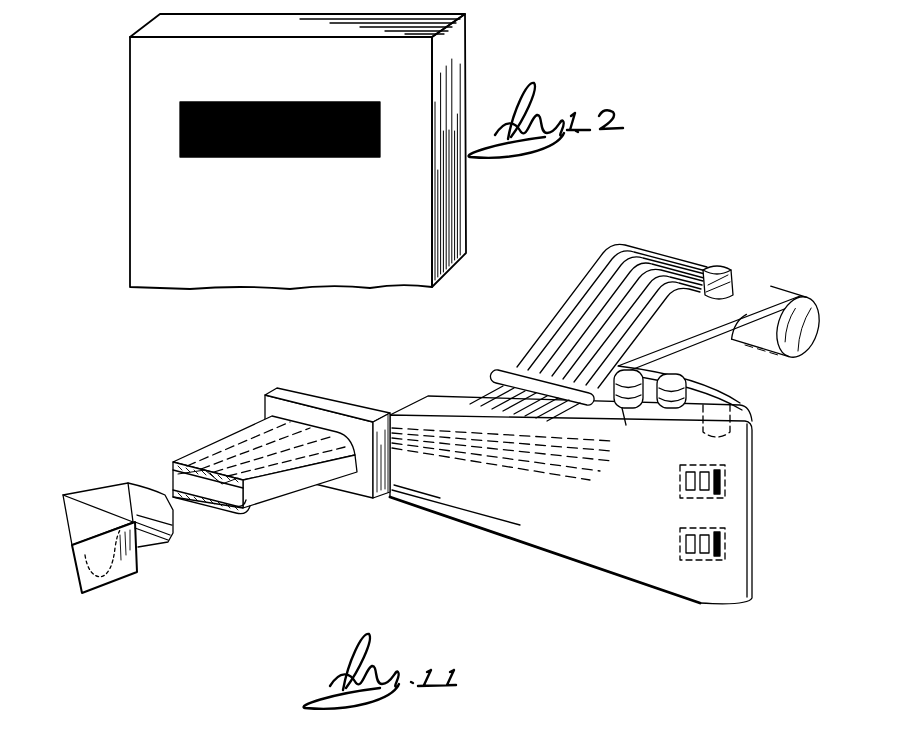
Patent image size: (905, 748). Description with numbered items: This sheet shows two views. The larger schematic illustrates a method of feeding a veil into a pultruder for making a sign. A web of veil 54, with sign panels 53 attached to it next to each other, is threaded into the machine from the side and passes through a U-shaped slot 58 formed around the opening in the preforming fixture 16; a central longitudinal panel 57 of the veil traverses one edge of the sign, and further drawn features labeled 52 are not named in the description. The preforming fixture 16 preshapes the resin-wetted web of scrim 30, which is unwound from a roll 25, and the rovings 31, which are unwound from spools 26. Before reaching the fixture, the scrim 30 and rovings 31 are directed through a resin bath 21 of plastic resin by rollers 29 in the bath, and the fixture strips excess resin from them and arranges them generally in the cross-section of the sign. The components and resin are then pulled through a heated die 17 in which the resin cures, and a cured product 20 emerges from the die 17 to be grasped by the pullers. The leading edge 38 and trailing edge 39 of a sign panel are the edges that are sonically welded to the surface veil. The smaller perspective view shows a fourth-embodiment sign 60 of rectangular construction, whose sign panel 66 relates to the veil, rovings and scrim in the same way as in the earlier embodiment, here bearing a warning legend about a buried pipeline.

In FIG. 12, the sign 60 is at (435, 71).
In FIG. 11, the preforming fixture 16 is at (339, 401).
In FIG. 11, the U-shaped slot 58 is at (390, 416).
In FIG. 11, the central longitudinal panel 57 is at (295, 486).
In FIG. 11, the conductors 52 is at (584, 478).
In FIG. 11, the heated die 17 is at (112, 550).
In FIG. 11, the web of veil 54 is at (578, 573).
In FIG. 11, the rollers 29 is at (498, 375).
In FIG. 11, the rovings 31 is at (576, 285).
In FIG. 11, the spools 26 is at (734, 276).
In FIG. 11, the web of scrim 30 is at (757, 296).
In FIG. 11, the roll 25 is at (761, 344).
In FIG. 11, the cured product 20 is at (661, 380).
In FIG. 11, the resin bath 21 is at (626, 425).
In FIG. 11, the sign panel 66 is at (740, 411).
In FIG. 11, the leading edge 38 is at (680, 536).
In FIG. 11, the trailing edge 39 is at (727, 483).
In FIG. 11, the sign panels 53 is at (735, 470).